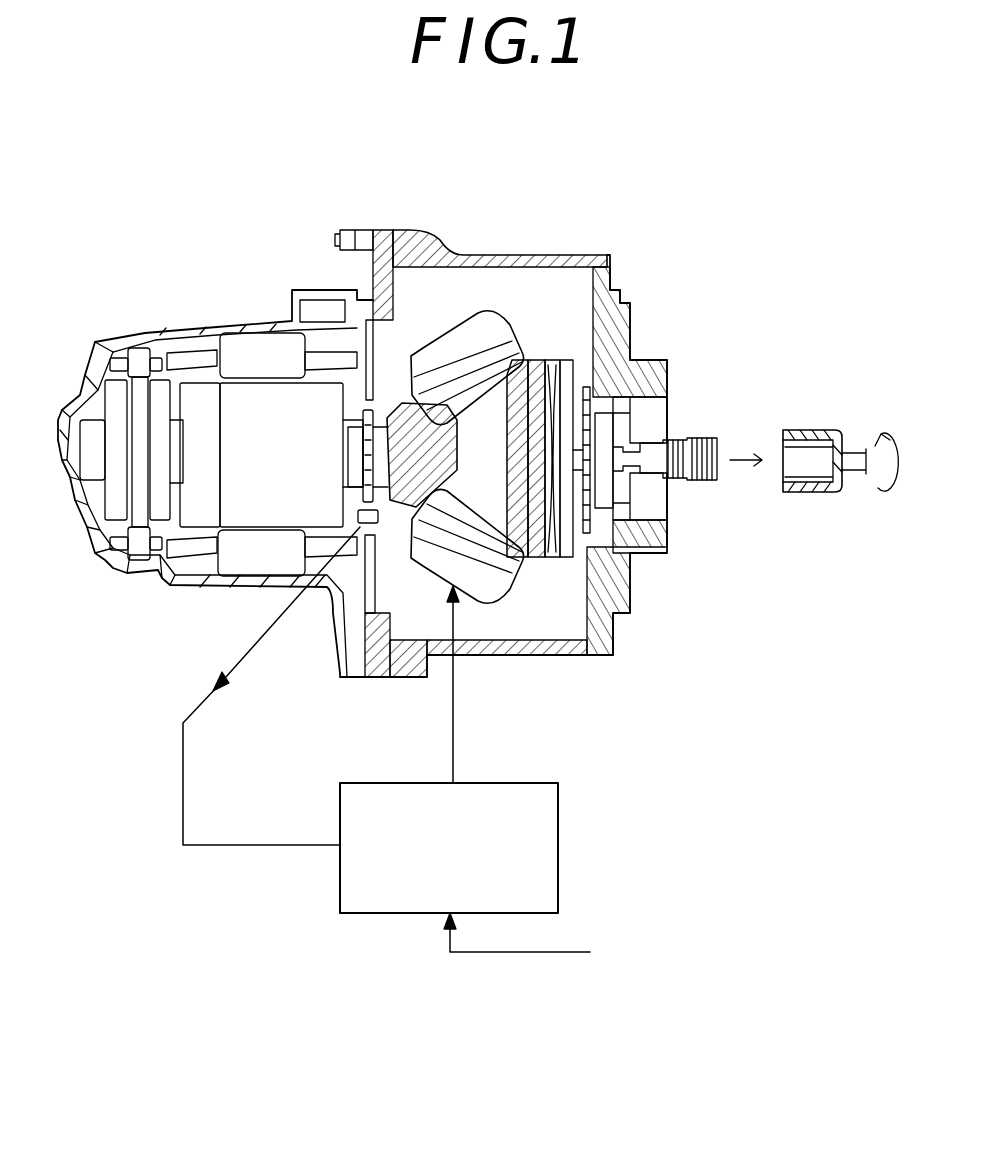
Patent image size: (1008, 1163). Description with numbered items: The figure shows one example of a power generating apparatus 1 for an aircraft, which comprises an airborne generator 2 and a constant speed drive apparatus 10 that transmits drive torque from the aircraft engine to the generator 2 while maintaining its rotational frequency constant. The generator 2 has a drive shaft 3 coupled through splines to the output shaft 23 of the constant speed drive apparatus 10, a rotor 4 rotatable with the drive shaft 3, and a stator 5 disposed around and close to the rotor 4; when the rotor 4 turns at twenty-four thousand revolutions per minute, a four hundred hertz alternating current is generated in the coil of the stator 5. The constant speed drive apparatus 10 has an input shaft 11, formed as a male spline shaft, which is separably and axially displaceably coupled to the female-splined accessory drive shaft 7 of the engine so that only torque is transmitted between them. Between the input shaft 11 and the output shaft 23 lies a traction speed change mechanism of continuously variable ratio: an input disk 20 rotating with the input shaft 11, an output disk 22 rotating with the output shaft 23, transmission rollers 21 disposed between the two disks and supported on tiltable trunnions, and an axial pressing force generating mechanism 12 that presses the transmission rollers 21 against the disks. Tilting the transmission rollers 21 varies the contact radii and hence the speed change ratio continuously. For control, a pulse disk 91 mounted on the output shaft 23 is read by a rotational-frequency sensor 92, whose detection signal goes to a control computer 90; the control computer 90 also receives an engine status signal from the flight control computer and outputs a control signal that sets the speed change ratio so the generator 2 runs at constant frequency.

The power generating apparatus 1 is at (165, 232).
The airborne generator 2 is at (190, 387).
The drive shaft 3 is at (350, 475).
The rotor 4 is at (238, 512).
The stator 5 is at (245, 572).
The accessory drive shaft 7 is at (815, 430).
The constant speed drive apparatus 10 is at (720, 212).
The input shaft 11 is at (697, 445).
The axial pressing force generating mechanism 12 is at (574, 563).
The input disk 20 is at (533, 360).
The transmission rollers 21 is at (477, 320).
The output disk 22 is at (405, 413).
The output shaft 23 is at (372, 453).
The control computer 90 is at (387, 800).
The pulse disk 91 is at (362, 418).
The rotational-frequency sensor 92 is at (373, 522).